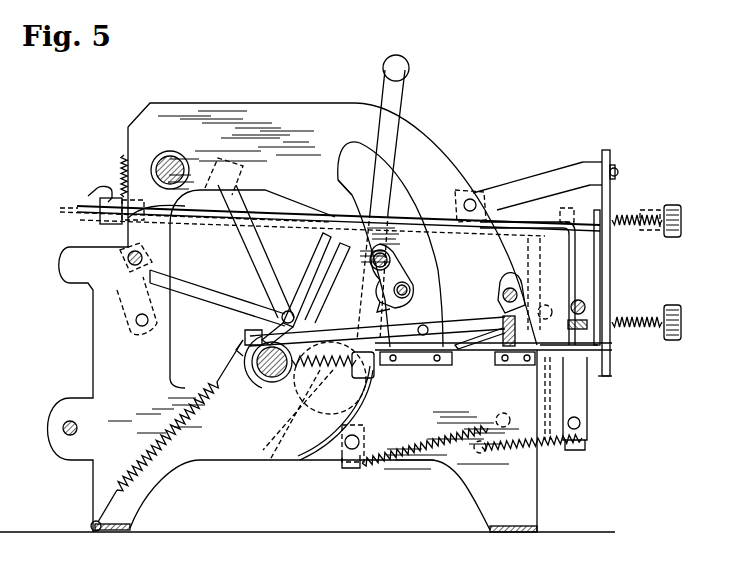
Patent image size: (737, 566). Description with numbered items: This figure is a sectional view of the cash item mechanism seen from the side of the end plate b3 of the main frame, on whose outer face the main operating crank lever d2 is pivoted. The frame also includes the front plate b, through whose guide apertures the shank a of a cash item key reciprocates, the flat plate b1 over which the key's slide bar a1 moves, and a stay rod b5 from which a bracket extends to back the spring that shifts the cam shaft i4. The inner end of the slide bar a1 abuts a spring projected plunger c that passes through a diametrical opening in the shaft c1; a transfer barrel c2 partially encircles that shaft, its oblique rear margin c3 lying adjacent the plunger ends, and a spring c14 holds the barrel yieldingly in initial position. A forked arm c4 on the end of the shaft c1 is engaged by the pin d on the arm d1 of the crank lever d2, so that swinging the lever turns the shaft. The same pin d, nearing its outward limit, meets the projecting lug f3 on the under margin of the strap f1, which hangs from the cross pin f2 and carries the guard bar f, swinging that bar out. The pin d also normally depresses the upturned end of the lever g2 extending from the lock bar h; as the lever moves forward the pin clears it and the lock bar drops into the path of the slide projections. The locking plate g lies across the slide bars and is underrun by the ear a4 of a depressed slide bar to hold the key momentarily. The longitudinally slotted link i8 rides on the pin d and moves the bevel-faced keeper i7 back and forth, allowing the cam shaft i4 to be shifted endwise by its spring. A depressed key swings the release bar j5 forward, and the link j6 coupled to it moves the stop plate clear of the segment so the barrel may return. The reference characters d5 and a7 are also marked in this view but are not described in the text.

The end plate b3 is at (268, 105).
The main operating crank lever d2 is at (405, 108).
The stay rod b5 is at (165, 170).
The front plate b is at (610, 190).
The link j6 is at (535, 226).
The shank of cash item key a is at (648, 228).
The cam shaft i4 is at (130, 256).
The arm of main operating crank lever d1 is at (248, 238).
The forked arm c4 is at (308, 268).
The link arm d5 is at (335, 236).
The cross pin f2 is at (384, 250).
The strap f1 is at (398, 262).
The guard bar f is at (408, 284).
The lock bar h is at (511, 287).
The locking plate g is at (468, 340).
The link i8 is at (207, 293).
The keeper i7 is at (183, 287).
The pin d is at (283, 312).
The lever g2 is at (320, 336).
The projecting lug f3 is at (392, 309).
The transfer barrel c2 is at (246, 332).
The rear margin of transfer barrel c3 is at (246, 372).
The shaft c1 is at (269, 384).
The slide bar a1 is at (372, 378).
The ear a4 is at (478, 352).
The spring projected plunger c is at (365, 384).
The spring c14 is at (167, 435).
The arm a7 is at (278, 452).
The release bar j5 is at (596, 341).
The flat plate b1 is at (606, 366).